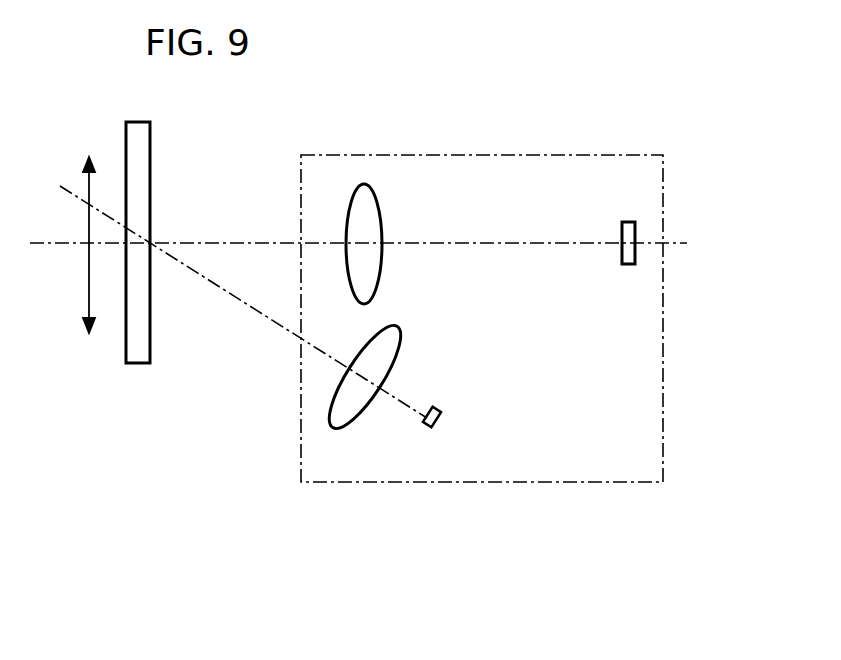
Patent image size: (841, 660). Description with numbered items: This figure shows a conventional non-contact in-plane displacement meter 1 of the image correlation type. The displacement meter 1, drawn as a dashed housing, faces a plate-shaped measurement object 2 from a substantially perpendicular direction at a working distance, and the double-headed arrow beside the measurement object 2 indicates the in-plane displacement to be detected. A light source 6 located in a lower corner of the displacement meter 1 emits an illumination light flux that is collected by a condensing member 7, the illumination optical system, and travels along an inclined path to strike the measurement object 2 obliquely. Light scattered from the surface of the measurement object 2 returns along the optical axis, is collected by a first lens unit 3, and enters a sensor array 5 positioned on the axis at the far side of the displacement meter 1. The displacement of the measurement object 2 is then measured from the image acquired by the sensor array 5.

The displacement meter 1 is at (663, 358).
The measurement object 2 is at (148, 168).
The first lens unit 3 is at (378, 200).
The sensor array 5 is at (635, 227).
The light source 6 is at (425, 428).
The condensing member 7 is at (402, 350).